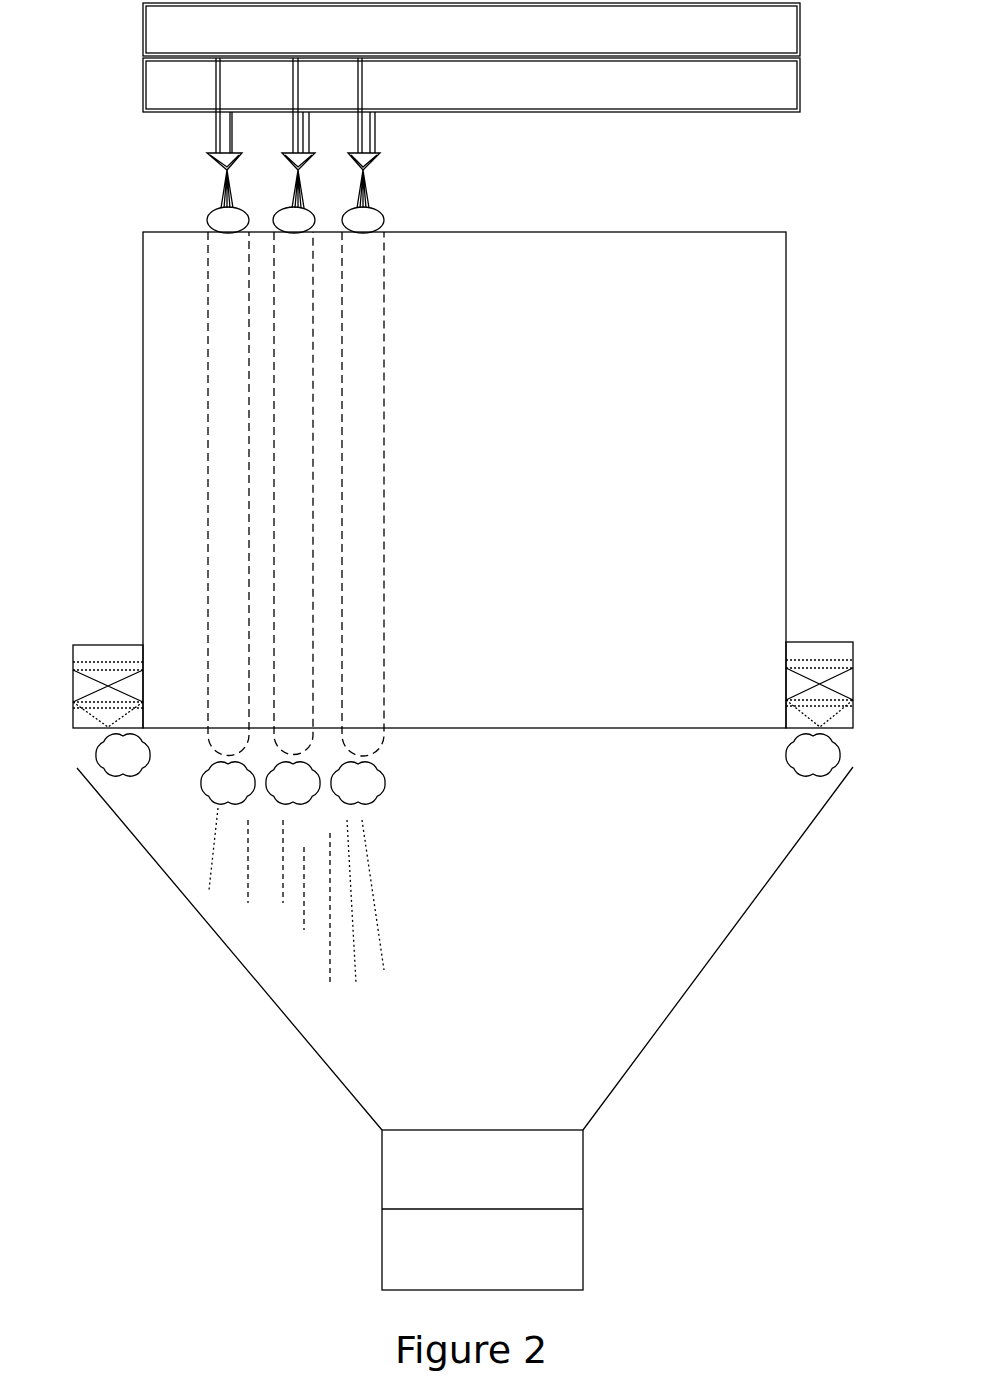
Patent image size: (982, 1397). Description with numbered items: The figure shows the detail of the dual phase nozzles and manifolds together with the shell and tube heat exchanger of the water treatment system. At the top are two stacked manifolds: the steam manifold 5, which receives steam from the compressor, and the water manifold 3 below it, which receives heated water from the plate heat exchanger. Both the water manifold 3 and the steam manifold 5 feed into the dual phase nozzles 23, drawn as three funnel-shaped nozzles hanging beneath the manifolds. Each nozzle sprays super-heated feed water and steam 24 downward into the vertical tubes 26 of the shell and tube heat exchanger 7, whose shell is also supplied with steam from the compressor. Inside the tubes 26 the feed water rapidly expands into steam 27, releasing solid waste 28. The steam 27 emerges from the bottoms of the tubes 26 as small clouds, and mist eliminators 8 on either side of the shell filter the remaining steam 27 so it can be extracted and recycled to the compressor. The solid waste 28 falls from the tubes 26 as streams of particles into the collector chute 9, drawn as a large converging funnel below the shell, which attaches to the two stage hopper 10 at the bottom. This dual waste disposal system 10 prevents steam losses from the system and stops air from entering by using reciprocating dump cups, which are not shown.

The steam manifold 5 is at (471, 29).
The water manifold 3 is at (471, 85).
The dual phase nozzles 23 is at (293, 116).
The super-heated feed water and steam 24 is at (295, 201).
The vertical tubes 26 is at (296, 494).
The shell and tube heat exchanger 7 is at (464, 480).
The mist eliminators 8 is at (461, 685).
The steam 27 is at (468, 769).
The solid waste 28 is at (296, 923).
The collector chute 9 is at (465, 948).
The two stage hopper 10 is at (482, 1210).